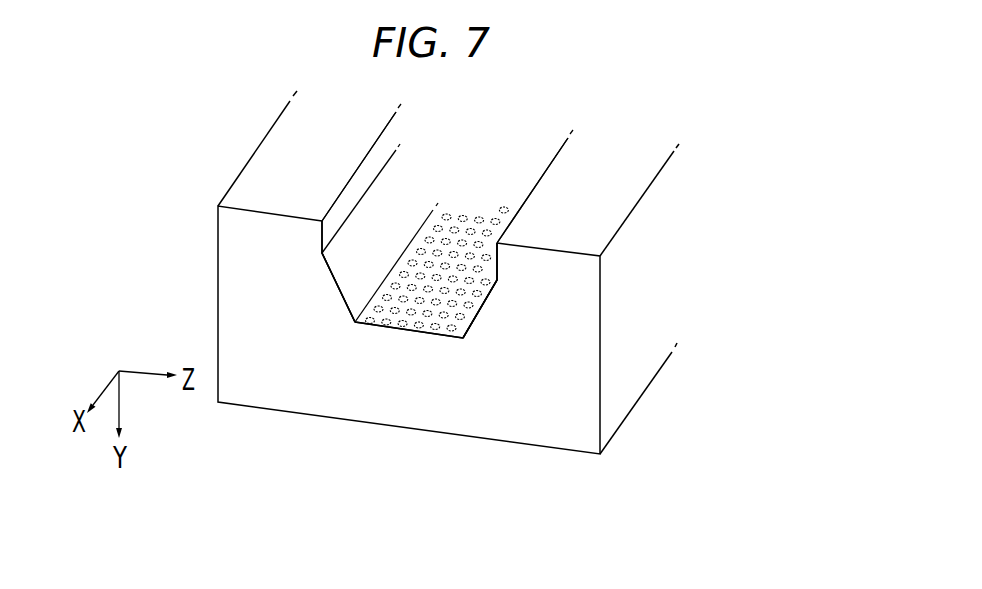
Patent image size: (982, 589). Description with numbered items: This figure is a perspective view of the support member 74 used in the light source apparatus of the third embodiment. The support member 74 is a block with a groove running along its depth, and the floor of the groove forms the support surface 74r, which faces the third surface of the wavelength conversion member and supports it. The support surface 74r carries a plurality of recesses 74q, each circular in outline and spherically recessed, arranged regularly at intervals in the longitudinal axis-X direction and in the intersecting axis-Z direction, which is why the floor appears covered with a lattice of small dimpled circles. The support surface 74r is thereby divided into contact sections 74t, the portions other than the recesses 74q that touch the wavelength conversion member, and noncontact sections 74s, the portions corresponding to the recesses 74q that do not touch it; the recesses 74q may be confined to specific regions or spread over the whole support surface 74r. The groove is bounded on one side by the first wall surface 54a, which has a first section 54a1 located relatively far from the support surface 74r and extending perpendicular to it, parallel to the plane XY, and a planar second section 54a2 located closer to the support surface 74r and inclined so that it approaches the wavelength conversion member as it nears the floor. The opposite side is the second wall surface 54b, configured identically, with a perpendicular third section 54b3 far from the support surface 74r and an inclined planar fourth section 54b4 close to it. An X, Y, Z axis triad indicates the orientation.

The support member 74 is at (190, 197).
The recesses 74q is at (388, 303).
The support surface 74r is at (460, 204).
The noncontact sections 74s is at (433, 302).
The contact sections 74t is at (447, 276).
The first wall surface 54a is at (381, 265).
The first section 54a1 is at (343, 281).
The second section 54a2 is at (365, 178).
The second wall surface 54b is at (541, 289).
The third section 54b3 is at (493, 240).
The fourth section 54b4 is at (465, 311).